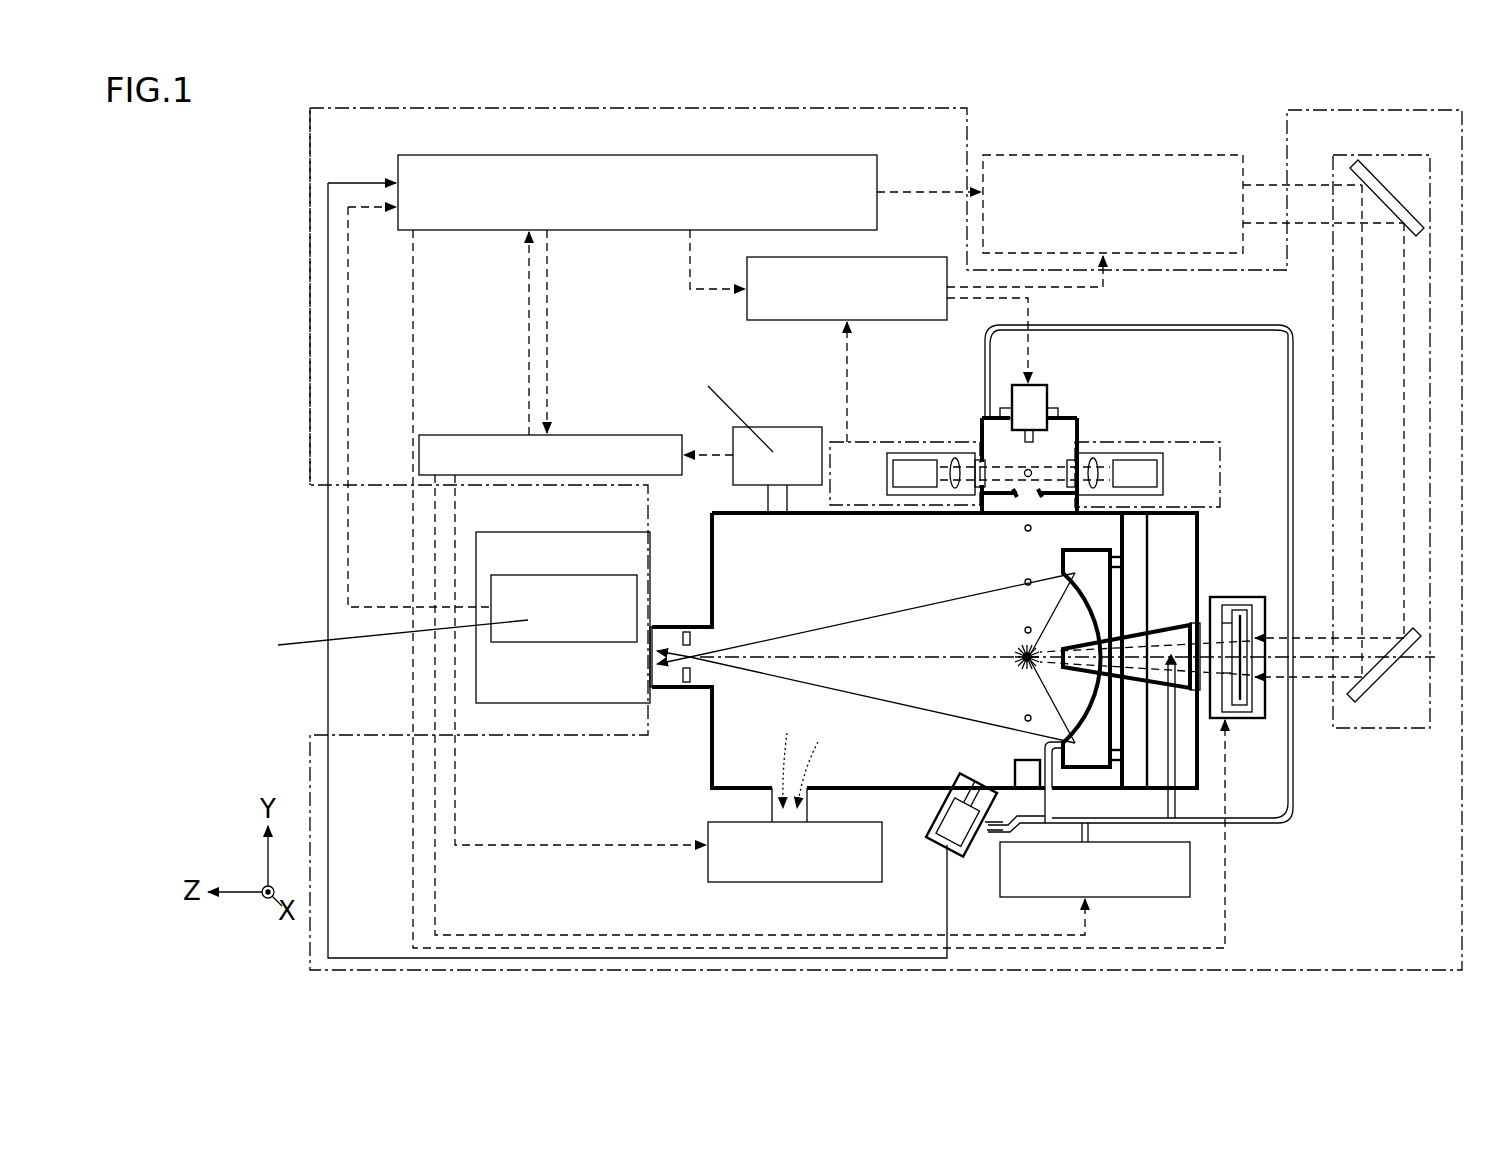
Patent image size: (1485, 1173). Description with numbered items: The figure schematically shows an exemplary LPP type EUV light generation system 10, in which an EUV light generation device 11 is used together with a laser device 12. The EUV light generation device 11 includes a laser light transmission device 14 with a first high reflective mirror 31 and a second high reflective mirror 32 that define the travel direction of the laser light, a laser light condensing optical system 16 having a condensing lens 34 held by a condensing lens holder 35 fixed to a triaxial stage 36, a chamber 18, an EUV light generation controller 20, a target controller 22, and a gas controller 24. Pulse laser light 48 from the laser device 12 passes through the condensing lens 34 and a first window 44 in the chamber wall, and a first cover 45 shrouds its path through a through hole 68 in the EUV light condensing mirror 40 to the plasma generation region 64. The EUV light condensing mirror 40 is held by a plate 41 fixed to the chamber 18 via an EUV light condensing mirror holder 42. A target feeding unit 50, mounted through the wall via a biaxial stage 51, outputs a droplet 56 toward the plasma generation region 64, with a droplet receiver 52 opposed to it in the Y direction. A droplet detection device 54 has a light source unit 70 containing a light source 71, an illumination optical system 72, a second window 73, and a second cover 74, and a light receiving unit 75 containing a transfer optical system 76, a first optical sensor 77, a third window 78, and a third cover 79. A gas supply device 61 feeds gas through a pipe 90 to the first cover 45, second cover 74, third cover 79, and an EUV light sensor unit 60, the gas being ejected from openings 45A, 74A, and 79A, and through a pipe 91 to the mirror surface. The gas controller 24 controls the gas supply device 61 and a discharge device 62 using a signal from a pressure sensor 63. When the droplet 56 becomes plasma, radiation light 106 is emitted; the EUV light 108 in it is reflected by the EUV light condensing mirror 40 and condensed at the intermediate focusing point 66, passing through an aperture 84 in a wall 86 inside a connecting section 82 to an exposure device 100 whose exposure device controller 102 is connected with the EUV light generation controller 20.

The EUV light generation system 10 is at (1237, 128).
The EUV light generation device 11 is at (310, 134).
The laser device 12 is at (1124, 155).
The laser light transmission device 14 is at (1382, 155).
The laser light condensing optical system 16 is at (1246, 593).
The chamber 18 is at (712, 526).
The EUV light generation controller 20 is at (637, 155).
The target controller 22 is at (916, 257).
The gas controller 24 is at (612, 435).
The first high reflective mirror 31 is at (1392, 200).
The second high reflective mirror 32 is at (1386, 668).
The condensing lens 34 is at (1240, 617).
The condensing lens holder 35 is at (1243, 712).
The triaxial stage 36 is at (1258, 718).
The EUV light condensing mirror 40 is at (1096, 614).
The plate 41 is at (1140, 543).
The EUV light condensing mirror holder 42 is at (1113, 555).
The first window 44 is at (1200, 635).
The first cover 45 is at (1174, 630).
The opening 45A is at (1047, 650).
The pulse laser light 48 is at (1305, 225).
The target feeding unit 50 is at (1037, 385).
The biaxial stage 51 is at (1055, 408).
The droplet receiver 52 is at (1015, 773).
The droplet detection device 54 is at (868, 442).
The droplet 56 is at (1030, 468).
The EUV light sensor unit 60 is at (935, 830).
The gas supply device 61 is at (1133, 897).
The discharge device 62 is at (795, 882).
The pressure sensor 63 is at (776, 427).
The plasma generation region 64 is at (1015, 664).
The intermediate focusing point 66 is at (683, 675).
The through hole 68 is at (1082, 683).
The light source unit 70 is at (1163, 462).
The light source 71 is at (1157, 478).
The illumination optical system 72 is at (1122, 453).
The second window 73 is at (1095, 460).
The second cover 74 is at (1045, 497).
The opening 74A is at (1044, 513).
The light receiving unit 75 is at (887, 458).
The transfer optical system 76 is at (955, 463).
The first optical sensor 77 is at (900, 478).
The third window 78 is at (978, 468).
The third cover 79 is at (1010, 497).
The opening 79A is at (1015, 512).
The connecting section 82 is at (676, 627).
The aperture 84 is at (692, 650).
The wall 86 is at (700, 680).
The pipe 90 is at (983, 846).
The pipe 91 is at (1054, 808).
The exposure device 100 is at (595, 532).
The exposure device controller 102 is at (525, 575).
The radiation light 106 is at (1046, 691).
The EUV light 108 is at (906, 710).